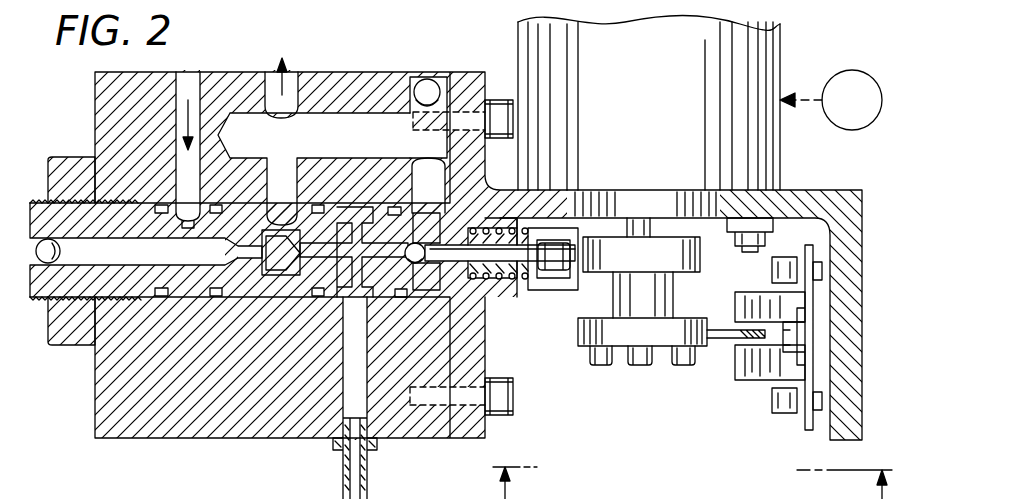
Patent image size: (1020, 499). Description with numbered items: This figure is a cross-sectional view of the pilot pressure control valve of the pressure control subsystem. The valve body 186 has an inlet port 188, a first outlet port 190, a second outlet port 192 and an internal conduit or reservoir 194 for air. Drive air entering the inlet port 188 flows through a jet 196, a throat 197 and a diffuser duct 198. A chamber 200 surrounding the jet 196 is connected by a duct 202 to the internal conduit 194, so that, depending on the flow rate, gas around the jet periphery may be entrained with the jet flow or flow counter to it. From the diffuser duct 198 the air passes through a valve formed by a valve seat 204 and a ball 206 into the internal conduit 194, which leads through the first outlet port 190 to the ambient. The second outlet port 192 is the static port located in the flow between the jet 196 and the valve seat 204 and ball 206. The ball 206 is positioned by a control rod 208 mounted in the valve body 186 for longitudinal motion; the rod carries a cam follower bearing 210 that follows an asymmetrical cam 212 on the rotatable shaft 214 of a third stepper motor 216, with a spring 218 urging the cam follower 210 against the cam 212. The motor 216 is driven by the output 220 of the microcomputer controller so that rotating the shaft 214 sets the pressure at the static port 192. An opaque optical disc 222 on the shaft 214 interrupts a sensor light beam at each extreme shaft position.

The valve body 186 is at (240, 85).
The inlet port 188 is at (190, 75).
The first outlet port 190 is at (290, 62).
The second outlet port 192 is at (352, 384).
The internal conduit or reservoir 194 is at (363, 128).
The jet 196 is at (238, 258).
The throat 197 is at (300, 290).
The diffuser duct 198 is at (398, 262).
The chamber 200 is at (278, 262).
The duct 202 is at (258, 210).
The valve seat 204 is at (407, 237).
The ball 206 is at (400, 264).
The control rod 208 is at (450, 254).
The cam follower bearing 210 is at (557, 258).
The asymmetrical cam 212 is at (678, 260).
The rotatable shaft 214 is at (650, 222).
The third stepper motor 216 is at (748, 57).
The spring 218 is at (513, 226).
The output 220 is at (831, 100).
The optical disc 222 is at (723, 342).